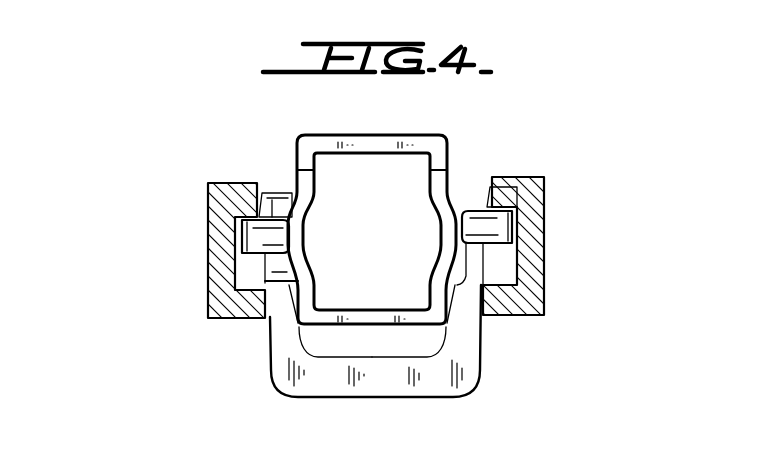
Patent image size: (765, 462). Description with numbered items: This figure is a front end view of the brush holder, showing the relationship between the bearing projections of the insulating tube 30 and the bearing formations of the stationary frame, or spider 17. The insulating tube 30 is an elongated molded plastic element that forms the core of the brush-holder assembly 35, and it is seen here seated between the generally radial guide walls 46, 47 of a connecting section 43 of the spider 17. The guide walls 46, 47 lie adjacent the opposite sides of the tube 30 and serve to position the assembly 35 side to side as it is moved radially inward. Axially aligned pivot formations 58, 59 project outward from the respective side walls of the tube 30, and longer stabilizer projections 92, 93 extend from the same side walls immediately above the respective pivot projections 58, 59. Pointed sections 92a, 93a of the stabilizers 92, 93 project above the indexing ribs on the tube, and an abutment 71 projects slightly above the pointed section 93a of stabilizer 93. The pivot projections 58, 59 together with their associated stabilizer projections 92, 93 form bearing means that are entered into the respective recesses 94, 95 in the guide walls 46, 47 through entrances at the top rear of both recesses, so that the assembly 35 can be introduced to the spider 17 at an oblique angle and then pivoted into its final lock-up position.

The spider 17 is at (198, 207).
The insulating tube 30 is at (452, 142).
The brush-holder assembly 35 is at (392, 126).
The connecting section 43 is at (293, 369).
The guide wall 46 is at (447, 338).
The guide wall 47 is at (312, 338).
The pivot formation 58 is at (468, 260).
The pivot formation 59 is at (275, 272).
The abutment 71 is at (284, 198).
The stabilizer projection 92 is at (494, 224).
The pointed section 92a is at (480, 190).
The stabilizer projection 93 is at (253, 232).
The pointed section 93a is at (263, 194).
The recess 94 is at (519, 208).
The recess 95 is at (226, 213).